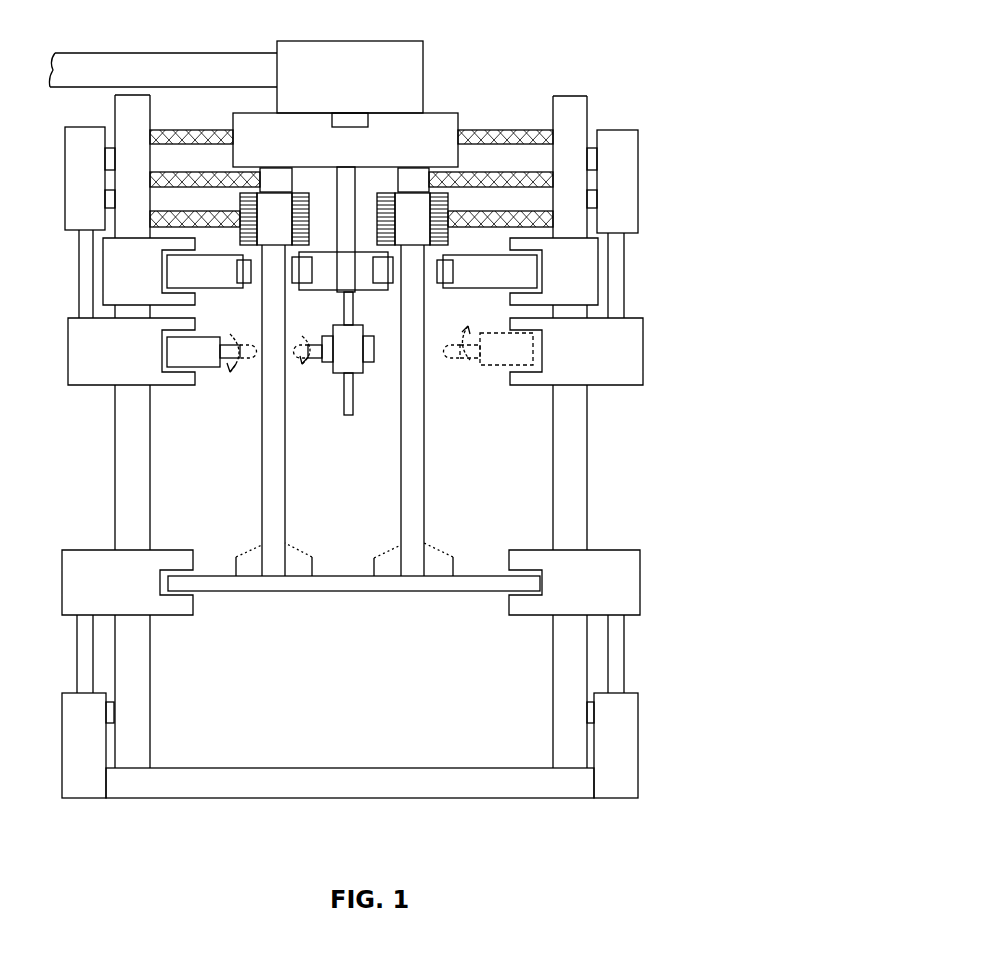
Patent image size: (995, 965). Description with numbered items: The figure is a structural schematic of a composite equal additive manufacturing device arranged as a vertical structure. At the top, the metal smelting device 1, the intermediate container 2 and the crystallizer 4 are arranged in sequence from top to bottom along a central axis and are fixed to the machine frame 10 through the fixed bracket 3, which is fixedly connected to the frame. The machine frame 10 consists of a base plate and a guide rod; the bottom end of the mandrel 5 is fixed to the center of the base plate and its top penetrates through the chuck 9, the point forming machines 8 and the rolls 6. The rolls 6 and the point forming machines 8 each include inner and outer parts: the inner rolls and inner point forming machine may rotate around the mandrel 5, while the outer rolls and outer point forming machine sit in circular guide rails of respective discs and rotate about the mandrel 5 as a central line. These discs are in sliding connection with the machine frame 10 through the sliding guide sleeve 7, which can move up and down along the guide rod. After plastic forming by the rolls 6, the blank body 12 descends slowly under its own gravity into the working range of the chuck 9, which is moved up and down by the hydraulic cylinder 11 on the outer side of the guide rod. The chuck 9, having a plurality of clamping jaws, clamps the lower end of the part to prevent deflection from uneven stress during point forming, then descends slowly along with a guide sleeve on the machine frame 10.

The metal smelting device 1 is at (398, 67).
The intermediate container 2 is at (425, 128).
The fixed bracket 3 is at (128, 272).
The crystallizer 4 is at (443, 217).
The mandrel 5 is at (345, 268).
The rolls 6 is at (477, 275).
The sliding guide sleeve 7 is at (127, 352).
The point forming machines 8 is at (343, 356).
The chuck 9 is at (452, 585).
The machine frame 10 is at (527, 787).
The hydraulic cylinder 11 is at (77, 708).
The blank body 12 is at (277, 508).